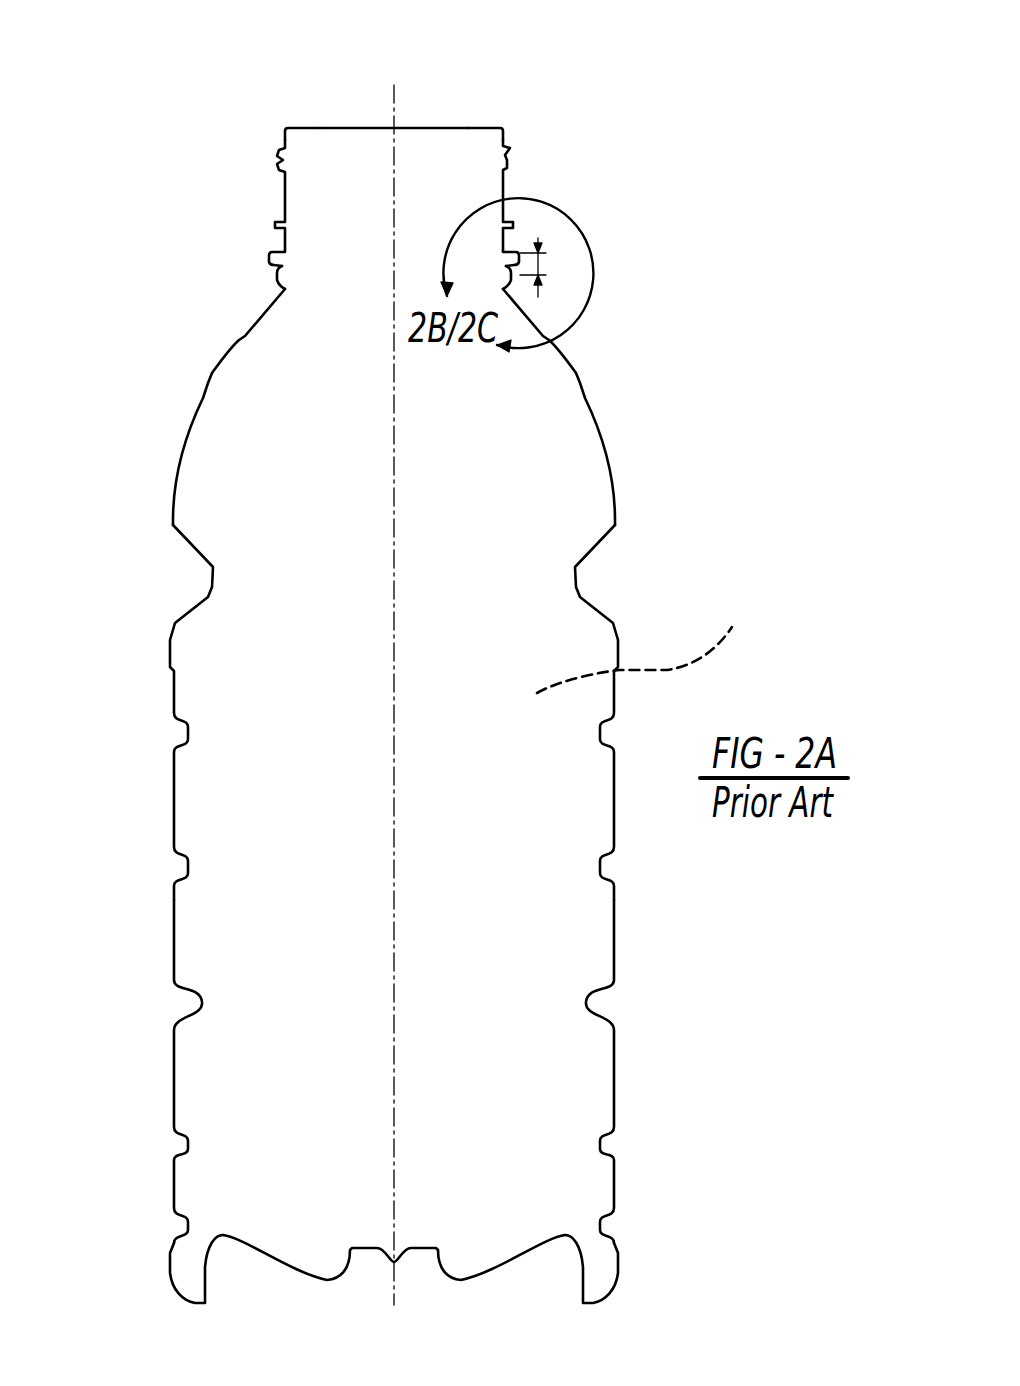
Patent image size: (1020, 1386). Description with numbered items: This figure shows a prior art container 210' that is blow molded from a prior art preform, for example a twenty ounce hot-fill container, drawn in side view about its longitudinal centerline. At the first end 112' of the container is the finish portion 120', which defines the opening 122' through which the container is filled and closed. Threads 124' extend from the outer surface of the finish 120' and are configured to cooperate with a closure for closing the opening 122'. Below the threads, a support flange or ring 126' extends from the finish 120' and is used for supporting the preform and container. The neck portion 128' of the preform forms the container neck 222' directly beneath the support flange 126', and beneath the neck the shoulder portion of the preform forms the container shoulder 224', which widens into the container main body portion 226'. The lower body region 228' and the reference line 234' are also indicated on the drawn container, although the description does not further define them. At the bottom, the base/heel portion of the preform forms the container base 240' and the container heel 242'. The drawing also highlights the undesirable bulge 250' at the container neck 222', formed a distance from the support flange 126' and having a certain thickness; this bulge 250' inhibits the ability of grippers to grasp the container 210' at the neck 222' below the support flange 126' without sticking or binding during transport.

The container 210' is at (406, 702).
The first end 112' is at (311, 107).
The finish portion 120' is at (236, 169).
The opening 122' is at (434, 100).
The threads 124' is at (562, 178).
The support flange 126' is at (408, 228).
The neck portion 128' is at (398, 286).
The container neck 222' is at (398, 286).
The container shoulder 224' is at (369, 407).
The container main body portion 226' is at (344, 712).
The body rib region 228' is at (348, 1071).
The label panel reference line 234' is at (649, 645).
The container base 240' is at (394, 1283).
The container heel 242' is at (439, 1279).
The bulge 250' is at (485, 309).